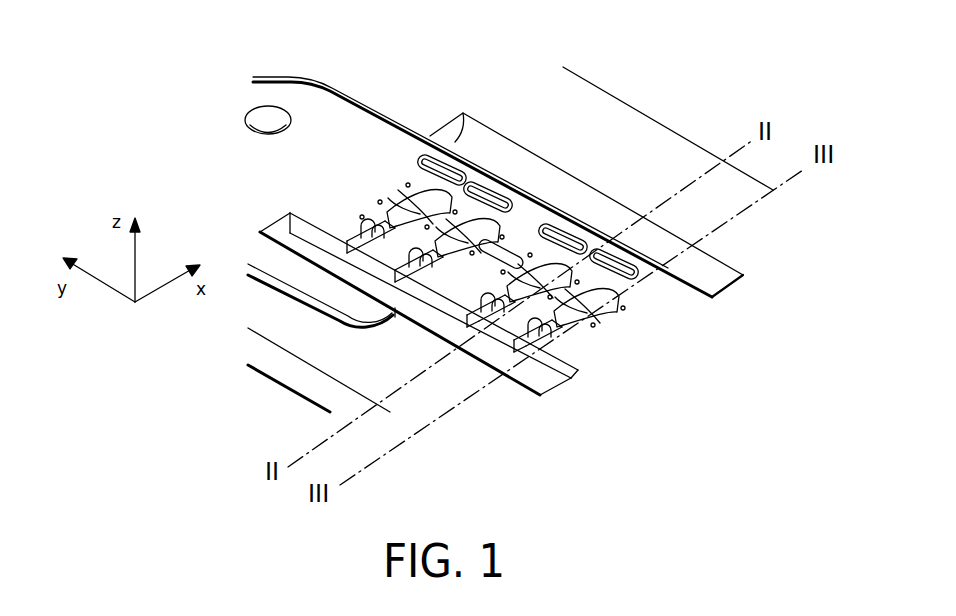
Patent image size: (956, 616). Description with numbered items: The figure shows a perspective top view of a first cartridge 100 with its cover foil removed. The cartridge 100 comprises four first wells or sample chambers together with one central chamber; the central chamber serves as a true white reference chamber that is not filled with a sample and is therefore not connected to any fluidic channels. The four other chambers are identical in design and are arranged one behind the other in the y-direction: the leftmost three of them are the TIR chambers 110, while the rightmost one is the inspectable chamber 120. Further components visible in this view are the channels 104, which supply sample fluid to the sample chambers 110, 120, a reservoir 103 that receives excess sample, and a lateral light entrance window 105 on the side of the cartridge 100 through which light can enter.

The cartridge 100 is at (525, 100).
The reservoir 103 is at (278, 232).
The channels 104 is at (347, 97).
The lateral light entrance window 105 is at (253, 353).
The TIR chambers 110 is at (418, 215).
The inspectable chamber 120 is at (594, 308).